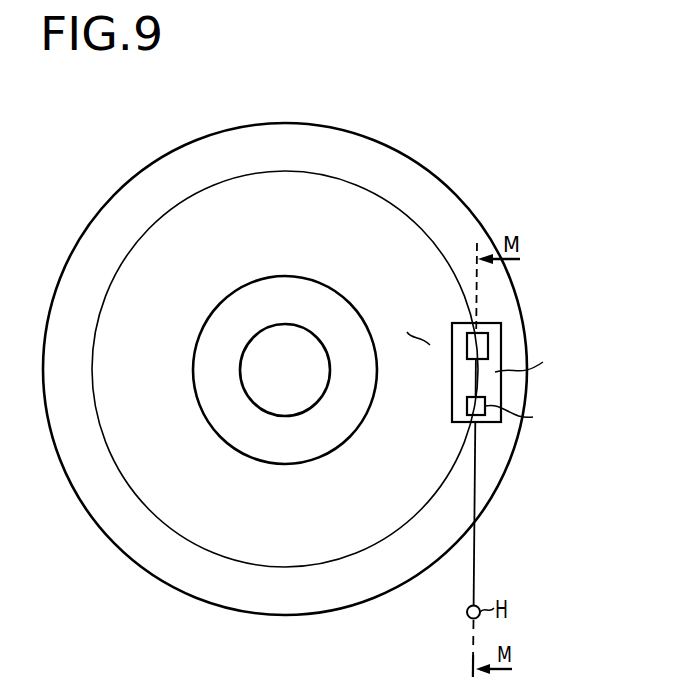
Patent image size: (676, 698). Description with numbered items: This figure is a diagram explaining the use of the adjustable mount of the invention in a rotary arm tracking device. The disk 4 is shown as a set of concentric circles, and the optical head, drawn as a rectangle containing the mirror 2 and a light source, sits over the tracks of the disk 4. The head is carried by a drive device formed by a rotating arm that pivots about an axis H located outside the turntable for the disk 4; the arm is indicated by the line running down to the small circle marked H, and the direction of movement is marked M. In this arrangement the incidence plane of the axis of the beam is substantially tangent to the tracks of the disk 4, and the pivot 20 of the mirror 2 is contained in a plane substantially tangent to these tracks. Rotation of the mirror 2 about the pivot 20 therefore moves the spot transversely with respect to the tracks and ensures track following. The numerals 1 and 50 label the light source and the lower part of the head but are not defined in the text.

The light source 1 is at (467, 405).
The mirror 2 is at (467, 350).
The pivot 20 is at (481, 333).
The light source unit 50 is at (464, 423).
The disk 4 is at (498, 482).